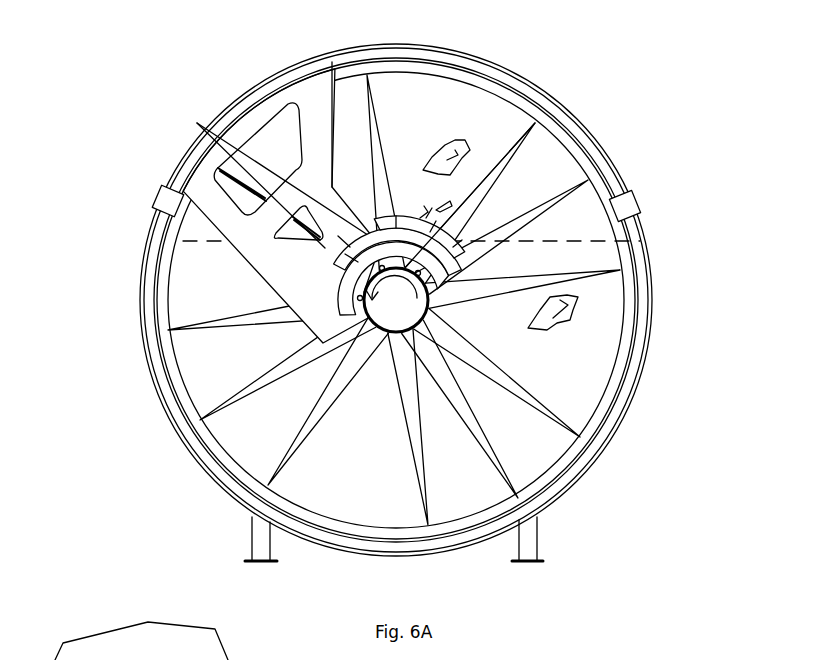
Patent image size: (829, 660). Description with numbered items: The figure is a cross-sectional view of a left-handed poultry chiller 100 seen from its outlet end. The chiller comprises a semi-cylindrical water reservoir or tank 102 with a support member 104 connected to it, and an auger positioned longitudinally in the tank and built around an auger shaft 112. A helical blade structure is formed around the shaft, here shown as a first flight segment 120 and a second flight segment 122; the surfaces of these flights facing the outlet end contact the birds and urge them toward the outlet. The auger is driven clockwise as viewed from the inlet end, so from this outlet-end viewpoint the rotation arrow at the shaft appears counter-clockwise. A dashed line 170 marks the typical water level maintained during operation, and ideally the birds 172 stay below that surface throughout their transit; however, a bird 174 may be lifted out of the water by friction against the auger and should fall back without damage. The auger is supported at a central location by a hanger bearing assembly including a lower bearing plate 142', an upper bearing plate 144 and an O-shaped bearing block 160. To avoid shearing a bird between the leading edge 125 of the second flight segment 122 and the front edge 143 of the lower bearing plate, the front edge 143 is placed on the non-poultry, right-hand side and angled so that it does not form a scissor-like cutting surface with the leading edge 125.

The poultry chiller 100 is at (160, 48).
The tank 102 is at (597, 460).
The support member 104 is at (514, 83).
The auger shaft 112 is at (377, 334).
The first flight segment 120 is at (590, 372).
The second flight segment 122 is at (424, 114).
The leading edge of the second flight segment 125 is at (545, 192).
The lower bearing plate 142' is at (281, 185).
The front edge of the lower bearing plate 143 is at (336, 108).
The upper bearing plate 144 is at (477, 233).
The O-shaped bearing block 160 is at (197, 123).
The water level 170 is at (572, 256).
The birds 172 is at (565, 325).
The bird 174 is at (455, 142).